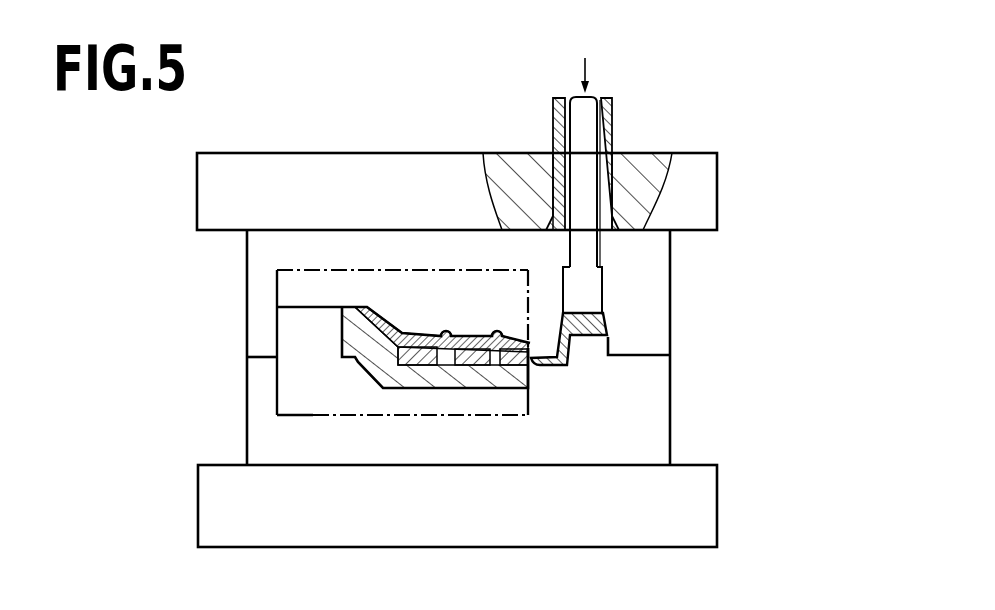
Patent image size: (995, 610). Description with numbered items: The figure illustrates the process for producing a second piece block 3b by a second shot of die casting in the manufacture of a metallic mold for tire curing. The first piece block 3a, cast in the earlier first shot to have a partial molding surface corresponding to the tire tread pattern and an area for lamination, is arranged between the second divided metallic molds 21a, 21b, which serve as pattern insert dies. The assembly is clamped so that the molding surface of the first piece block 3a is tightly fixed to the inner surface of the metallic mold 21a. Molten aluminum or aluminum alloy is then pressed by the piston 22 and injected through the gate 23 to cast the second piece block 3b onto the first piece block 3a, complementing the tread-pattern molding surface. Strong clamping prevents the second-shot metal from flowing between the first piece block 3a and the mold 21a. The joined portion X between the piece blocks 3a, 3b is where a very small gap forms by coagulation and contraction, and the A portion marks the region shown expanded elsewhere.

The second divided metallic mold 21a is at (363, 270).
The second divided metallic mold 21b is at (306, 416).
The first piece block 3a is at (342, 345).
The second piece block 3b is at (428, 336).
The piston 22 is at (612, 100).
The gate 23 is at (534, 366).
The A portion A is at (503, 386).
The joined portion X is at (388, 365).